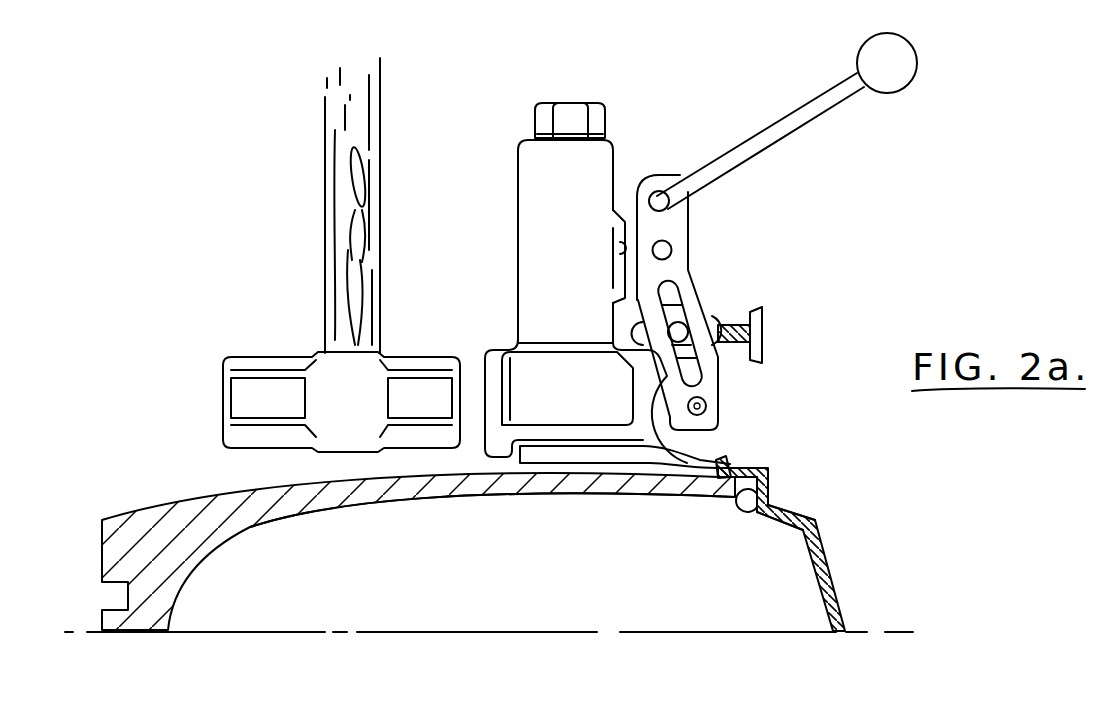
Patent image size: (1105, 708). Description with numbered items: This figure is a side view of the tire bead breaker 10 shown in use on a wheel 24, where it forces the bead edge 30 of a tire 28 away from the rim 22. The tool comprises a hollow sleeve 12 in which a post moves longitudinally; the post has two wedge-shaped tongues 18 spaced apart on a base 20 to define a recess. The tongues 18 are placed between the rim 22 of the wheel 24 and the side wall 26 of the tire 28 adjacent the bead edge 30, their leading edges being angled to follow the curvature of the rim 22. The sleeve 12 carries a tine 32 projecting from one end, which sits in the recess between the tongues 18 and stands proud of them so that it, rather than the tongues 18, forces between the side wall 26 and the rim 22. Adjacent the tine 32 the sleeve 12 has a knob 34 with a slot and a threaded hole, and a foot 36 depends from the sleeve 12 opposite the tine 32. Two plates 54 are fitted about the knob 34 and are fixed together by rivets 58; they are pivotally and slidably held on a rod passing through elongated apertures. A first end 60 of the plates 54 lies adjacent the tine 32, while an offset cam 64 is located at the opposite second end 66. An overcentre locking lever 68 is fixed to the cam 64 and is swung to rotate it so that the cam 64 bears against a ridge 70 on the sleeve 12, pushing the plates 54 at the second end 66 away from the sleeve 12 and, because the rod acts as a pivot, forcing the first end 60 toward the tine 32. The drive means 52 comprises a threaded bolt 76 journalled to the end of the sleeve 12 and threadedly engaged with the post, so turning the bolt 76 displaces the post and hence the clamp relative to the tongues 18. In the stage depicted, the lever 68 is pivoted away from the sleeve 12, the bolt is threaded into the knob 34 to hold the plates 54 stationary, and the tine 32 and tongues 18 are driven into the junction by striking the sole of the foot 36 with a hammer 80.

The tire bead breaker 10 is at (480, 81).
The sleeve 12 is at (485, 245).
The tongues 18 is at (673, 452).
The base 20 is at (580, 470).
The rim 22 is at (772, 490).
The wheel 24 is at (862, 596).
The side wall 26 is at (440, 497).
The tire 28 is at (152, 484).
The bead edge 30 is at (747, 504).
The tine 32 is at (676, 458).
The knob 34 is at (720, 302).
The foot 36 is at (484, 360).
The drive means 52 is at (763, 326).
The plates 54 is at (677, 232).
The rivets 58 is at (704, 406).
The first end 60 is at (718, 395).
The offset cam 64 is at (693, 194).
The second end 66 is at (690, 255).
The overcentre locking lever 68 is at (800, 127).
The ridge 70 is at (622, 248).
The threaded bolt 76 is at (601, 104).
The hammer 80 is at (333, 409).